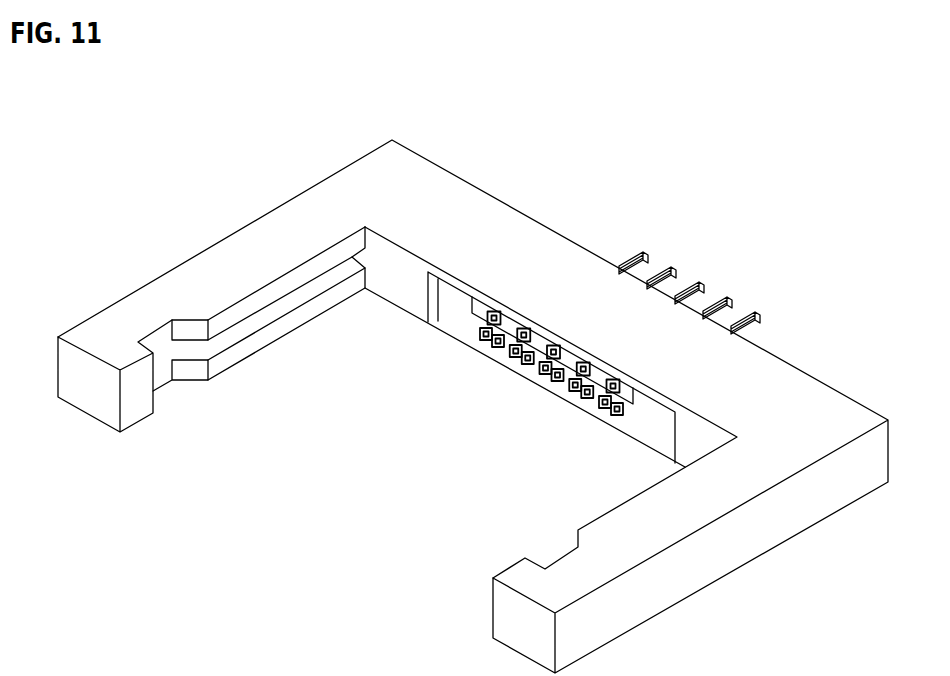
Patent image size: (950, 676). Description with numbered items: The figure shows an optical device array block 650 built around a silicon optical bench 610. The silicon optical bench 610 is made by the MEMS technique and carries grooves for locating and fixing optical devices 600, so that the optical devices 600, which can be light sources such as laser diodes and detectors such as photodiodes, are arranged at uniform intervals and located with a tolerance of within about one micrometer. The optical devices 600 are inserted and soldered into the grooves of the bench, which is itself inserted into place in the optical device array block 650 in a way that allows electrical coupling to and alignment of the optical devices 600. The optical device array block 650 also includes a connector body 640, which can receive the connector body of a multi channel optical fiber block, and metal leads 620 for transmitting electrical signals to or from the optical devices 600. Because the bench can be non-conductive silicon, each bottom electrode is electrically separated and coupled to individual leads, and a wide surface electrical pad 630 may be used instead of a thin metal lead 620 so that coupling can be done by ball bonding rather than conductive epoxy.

The optical devices 600 is at (494, 341).
The silicon optical bench 610 is at (566, 340).
The metal leads 620 is at (706, 280).
The electrical pad 630 is at (568, 398).
The connector body 640 is at (183, 402).
The optical device array block 650 is at (291, 137).